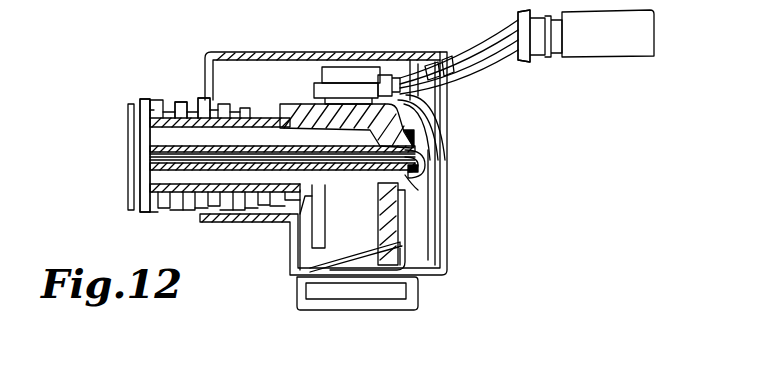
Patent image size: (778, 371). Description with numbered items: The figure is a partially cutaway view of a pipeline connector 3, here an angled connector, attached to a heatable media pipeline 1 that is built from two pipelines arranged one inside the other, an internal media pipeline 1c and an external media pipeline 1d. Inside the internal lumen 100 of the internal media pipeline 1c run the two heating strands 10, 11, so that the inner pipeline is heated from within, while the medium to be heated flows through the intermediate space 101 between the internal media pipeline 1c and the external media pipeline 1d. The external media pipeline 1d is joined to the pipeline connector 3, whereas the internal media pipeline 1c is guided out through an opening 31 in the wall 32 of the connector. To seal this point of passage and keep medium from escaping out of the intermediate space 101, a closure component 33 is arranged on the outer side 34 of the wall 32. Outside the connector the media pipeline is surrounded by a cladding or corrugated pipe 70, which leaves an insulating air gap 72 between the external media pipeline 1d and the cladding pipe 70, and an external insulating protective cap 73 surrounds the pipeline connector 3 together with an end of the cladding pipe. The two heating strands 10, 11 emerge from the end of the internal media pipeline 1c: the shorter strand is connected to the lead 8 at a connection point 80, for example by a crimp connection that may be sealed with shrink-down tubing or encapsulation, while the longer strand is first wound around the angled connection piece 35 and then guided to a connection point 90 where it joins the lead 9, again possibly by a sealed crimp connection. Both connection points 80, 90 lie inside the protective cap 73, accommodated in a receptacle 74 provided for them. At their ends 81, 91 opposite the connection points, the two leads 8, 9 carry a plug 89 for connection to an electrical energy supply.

The heatable media pipeline 1 is at (160, 106).
The internal media pipeline 1c is at (150, 148).
The external media pipeline 1d is at (150, 120).
The internal lumen 100 is at (150, 157).
The intermediate space 101 is at (162, 180).
The pipeline connector 3 is at (392, 120).
The lead 8 is at (428, 68).
The lead 9 is at (452, 62).
The heating strand 10 is at (422, 164).
The heating strand 11 is at (430, 150).
The opening 31 is at (416, 169).
The wall 32 is at (395, 213).
The closure component 33 is at (420, 176).
The outer side 34 is at (404, 230).
The angled connection piece 35 is at (305, 222).
The cladding pipe 70 is at (173, 108).
The insulating air gap 72 is at (198, 108).
The protective cap 73 is at (266, 55).
The receptacle 74 is at (322, 73).
The connection point 80 is at (344, 90).
The end 81 is at (526, 44).
The plug 89 is at (592, 48).
The connection point 90 is at (386, 78).
The end 91 is at (518, 23).